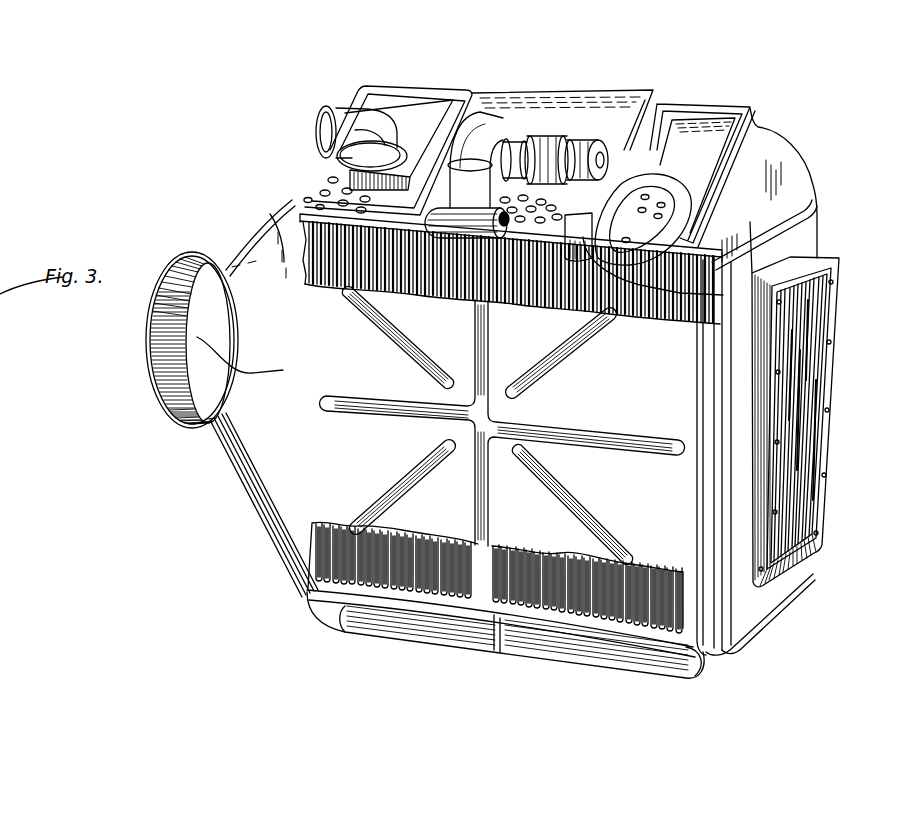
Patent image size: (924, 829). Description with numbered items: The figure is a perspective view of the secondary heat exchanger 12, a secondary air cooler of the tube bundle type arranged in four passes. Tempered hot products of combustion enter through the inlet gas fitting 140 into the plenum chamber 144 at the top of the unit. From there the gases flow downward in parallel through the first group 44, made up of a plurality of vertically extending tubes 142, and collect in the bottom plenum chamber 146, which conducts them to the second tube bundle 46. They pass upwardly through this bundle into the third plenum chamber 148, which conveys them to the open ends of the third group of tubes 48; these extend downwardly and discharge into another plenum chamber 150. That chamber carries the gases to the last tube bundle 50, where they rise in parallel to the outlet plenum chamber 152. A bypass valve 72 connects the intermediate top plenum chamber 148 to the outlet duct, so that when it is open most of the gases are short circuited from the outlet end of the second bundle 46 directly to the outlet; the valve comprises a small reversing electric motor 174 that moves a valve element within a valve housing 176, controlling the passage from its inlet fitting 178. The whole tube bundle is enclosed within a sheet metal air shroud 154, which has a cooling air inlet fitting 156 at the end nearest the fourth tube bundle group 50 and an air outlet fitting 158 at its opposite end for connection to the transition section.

The secondary heat exchanger 12 is at (581, 74).
The first group of tubes 44 is at (418, 292).
The second tube bundle 46 is at (511, 300).
The third group of tubes 48 is at (581, 306).
The last tube bundle 50 is at (688, 320).
The bypass valve 72 is at (537, 144).
The inlet gas fitting 140 is at (318, 150).
The tubes 142 is at (296, 200).
The plenum chamber 144 is at (397, 107).
The plenum chamber 146 is at (438, 630).
The third plenum chamber 148 is at (573, 110).
The plenum chamber 150 is at (598, 650).
The outlet plenum chamber 152 is at (687, 163).
The sheet metal air shroud 154 is at (197, 337).
The cooling air inlet fitting 156 is at (820, 460).
The air outlet fitting 158 is at (172, 332).
The reversing electric motor 174 is at (640, 102).
The valve housing 176 is at (506, 140).
The inlet fitting 178 is at (477, 138).